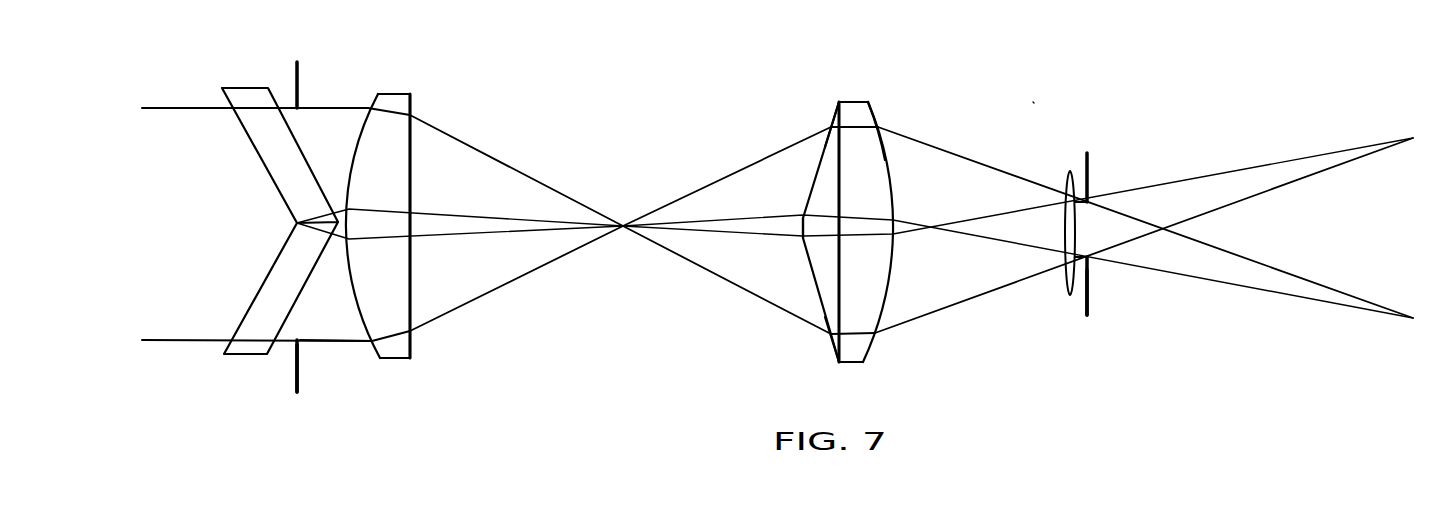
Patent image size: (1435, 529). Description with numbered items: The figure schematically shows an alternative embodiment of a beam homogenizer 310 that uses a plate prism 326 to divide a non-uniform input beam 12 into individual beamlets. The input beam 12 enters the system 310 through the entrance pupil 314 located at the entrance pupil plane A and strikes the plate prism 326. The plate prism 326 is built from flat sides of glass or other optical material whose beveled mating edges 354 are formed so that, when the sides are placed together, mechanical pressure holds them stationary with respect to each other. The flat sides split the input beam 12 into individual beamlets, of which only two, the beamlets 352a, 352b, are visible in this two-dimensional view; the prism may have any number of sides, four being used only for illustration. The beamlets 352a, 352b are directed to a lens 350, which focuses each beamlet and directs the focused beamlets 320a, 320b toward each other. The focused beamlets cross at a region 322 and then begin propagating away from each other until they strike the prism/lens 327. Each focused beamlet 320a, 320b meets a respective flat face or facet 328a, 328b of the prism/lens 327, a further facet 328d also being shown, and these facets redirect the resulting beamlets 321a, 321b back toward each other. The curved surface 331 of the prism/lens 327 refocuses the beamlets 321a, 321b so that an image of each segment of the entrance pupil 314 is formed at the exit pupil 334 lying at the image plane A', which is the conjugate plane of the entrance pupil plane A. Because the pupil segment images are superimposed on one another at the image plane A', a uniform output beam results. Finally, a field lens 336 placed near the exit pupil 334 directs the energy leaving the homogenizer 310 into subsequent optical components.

The input beam 12 is at (202, 108).
The entrance pupil 314 is at (174, 211).
The plate prism 326 is at (277, 79).
The beamlet 352a is at (328, 108).
The beamlet 352b is at (325, 342).
The beveled mating edges 354 is at (325, 212).
The lens 350 is at (398, 93).
The focused beamlet 320a is at (485, 152).
The focused beamlet 320b is at (500, 285).
The crossing region 322 is at (626, 217).
The prism/lens 327 is at (852, 100).
The facet 328a is at (835, 348).
The facet 328b is at (837, 112).
The facet 328d is at (822, 226).
The curved surface 331 is at (878, 112).
The redirected beamlet 321a is at (962, 304).
The redirected beamlet 321b is at (962, 156).
The field lens 336 is at (1068, 171).
The exit pupil 334 is at (1092, 199).
The beam homogenizer 310 is at (1033, 102).
The entrance pupil plane A is at (258, 380).
The image plane A' is at (1115, 299).